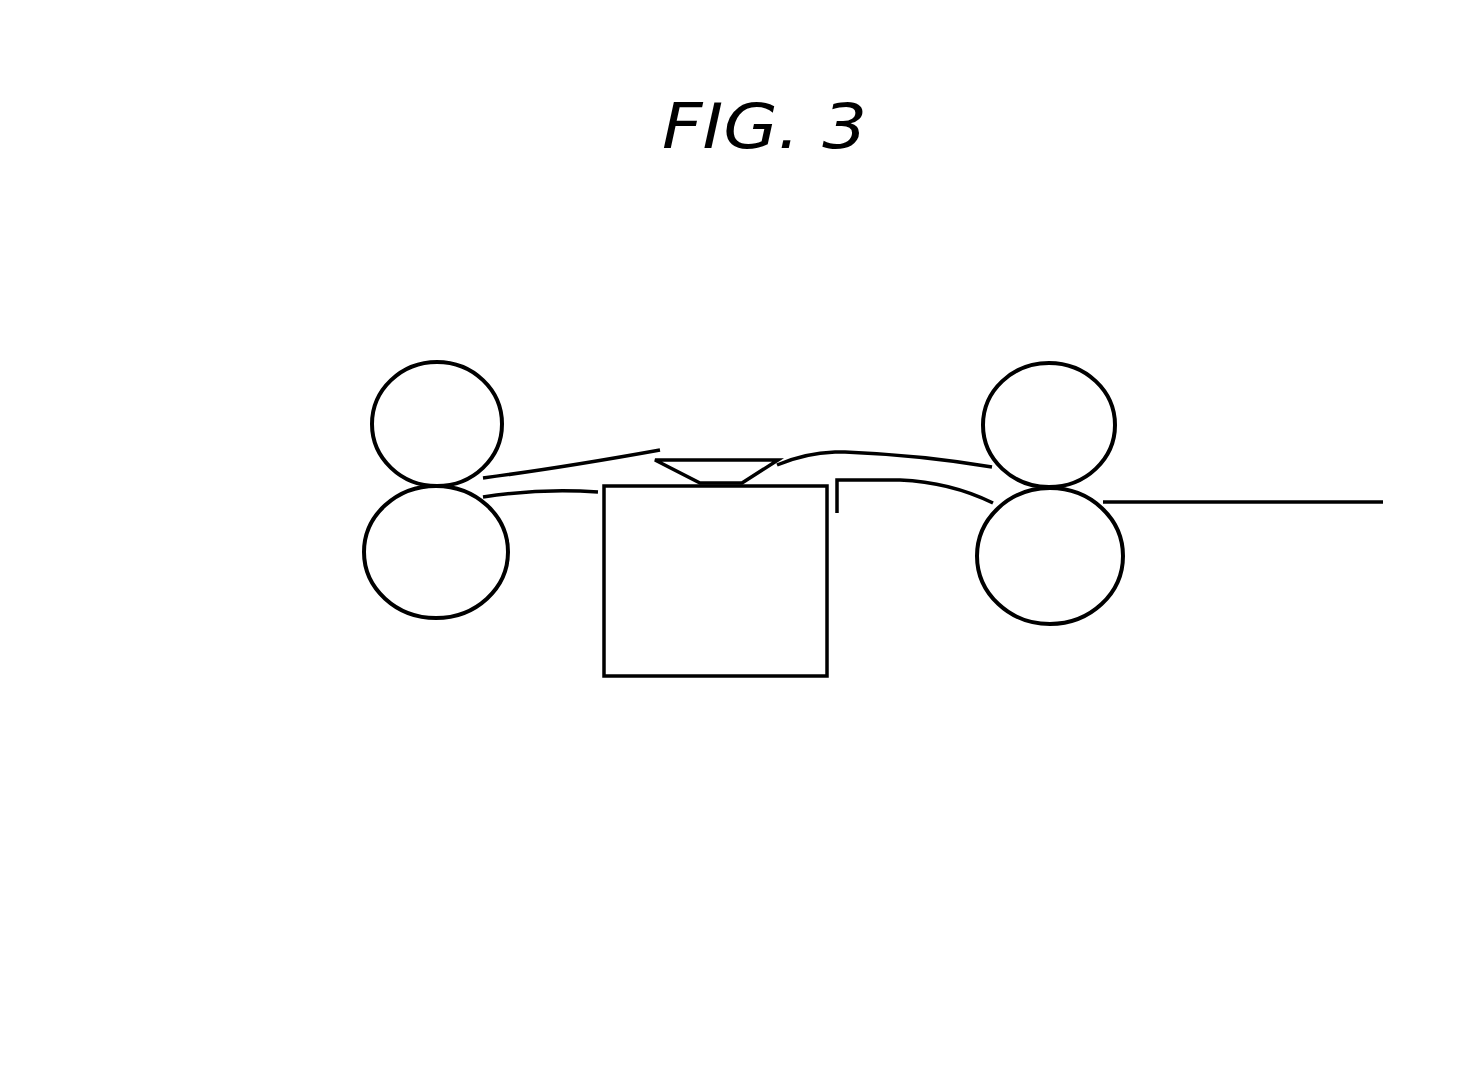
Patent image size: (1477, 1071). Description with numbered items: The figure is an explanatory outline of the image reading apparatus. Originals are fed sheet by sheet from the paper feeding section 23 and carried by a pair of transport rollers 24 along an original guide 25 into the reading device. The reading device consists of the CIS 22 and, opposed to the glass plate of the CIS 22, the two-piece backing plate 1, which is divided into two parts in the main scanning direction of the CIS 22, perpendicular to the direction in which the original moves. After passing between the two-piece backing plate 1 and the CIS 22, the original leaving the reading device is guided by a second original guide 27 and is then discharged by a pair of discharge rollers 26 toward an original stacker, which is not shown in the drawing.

The two-piece backing plate 1 is at (745, 447).
The CIS 22 is at (718, 683).
The paper feeding section 23 is at (1207, 493).
The transport rollers 24 is at (1112, 468).
The original guide 25 is at (943, 467).
The discharge rollers 26 is at (363, 535).
The original guide 27 is at (577, 473).